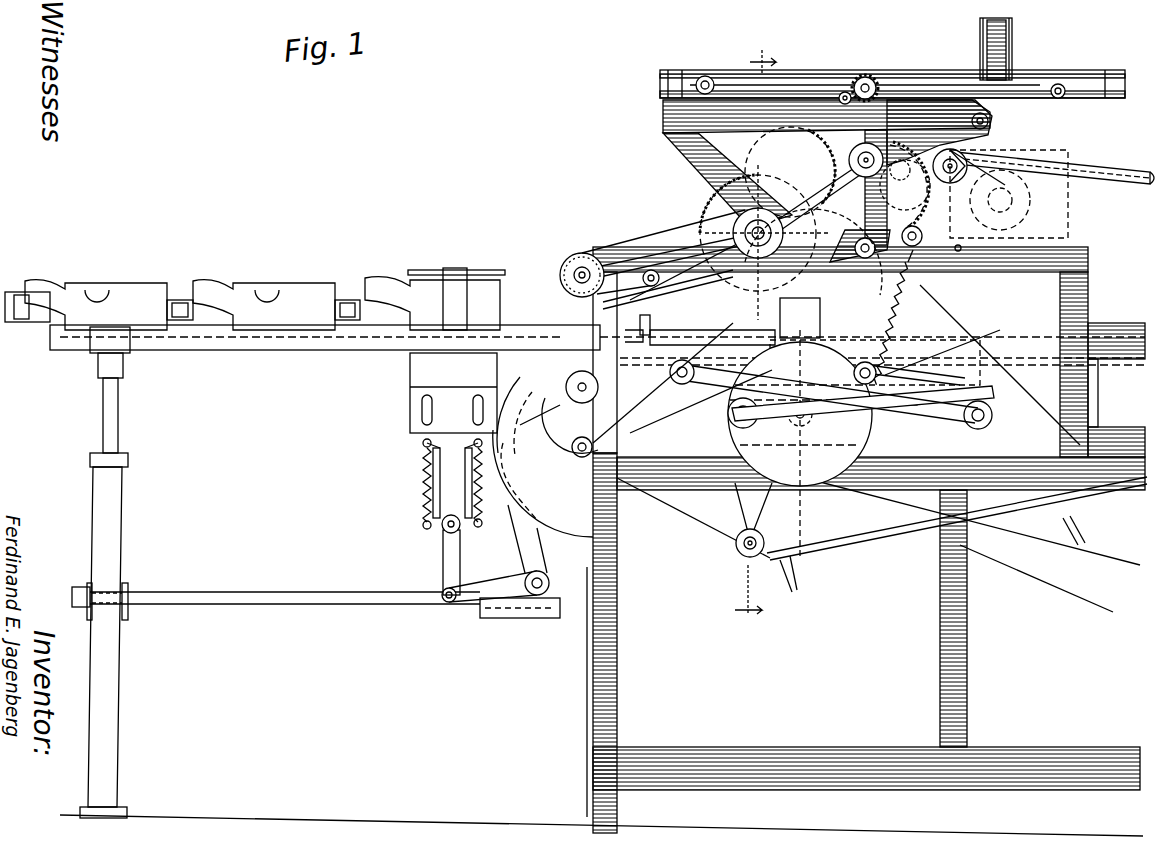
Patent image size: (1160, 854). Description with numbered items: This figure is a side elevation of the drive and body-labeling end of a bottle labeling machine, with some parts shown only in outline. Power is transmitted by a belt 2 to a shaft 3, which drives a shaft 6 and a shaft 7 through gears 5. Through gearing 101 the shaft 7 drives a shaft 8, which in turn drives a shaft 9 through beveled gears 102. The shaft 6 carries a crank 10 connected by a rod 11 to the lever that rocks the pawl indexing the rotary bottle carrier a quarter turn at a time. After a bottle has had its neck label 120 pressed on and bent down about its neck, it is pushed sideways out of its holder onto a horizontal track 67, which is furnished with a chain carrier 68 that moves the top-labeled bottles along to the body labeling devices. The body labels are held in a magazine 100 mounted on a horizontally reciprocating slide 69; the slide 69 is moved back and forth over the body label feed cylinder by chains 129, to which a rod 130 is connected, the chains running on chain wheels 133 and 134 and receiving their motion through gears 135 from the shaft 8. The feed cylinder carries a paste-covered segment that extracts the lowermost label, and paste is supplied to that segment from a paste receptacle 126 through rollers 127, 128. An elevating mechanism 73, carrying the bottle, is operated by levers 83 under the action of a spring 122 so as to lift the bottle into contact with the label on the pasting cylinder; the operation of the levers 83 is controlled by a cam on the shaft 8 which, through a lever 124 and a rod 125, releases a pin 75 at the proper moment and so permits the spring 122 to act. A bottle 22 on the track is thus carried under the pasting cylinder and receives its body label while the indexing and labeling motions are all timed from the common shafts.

The belt 2 is at (1053, 603).
The shaft 3 is at (758, 358).
The gears 5 is at (825, 284).
The shaft 6 is at (801, 420).
The shaft 7 is at (745, 231).
The shaft 8 is at (852, 155).
The shaft 9 is at (1078, 150).
The crank 10 is at (995, 123).
The rod 11 is at (995, 390).
The bottle 22 is at (160, 281).
The track 67 is at (393, 345).
The supplemental chain carrier 68 is at (1159, 383).
The slide 69 is at (1025, 86).
The elevating mechanism 73 is at (670, 360).
The pin 75 is at (932, 375).
The levers 83 is at (690, 384).
The body label magazine 100 is at (1012, 40).
The gearing 101 is at (810, 146).
The beveled gears 102 is at (912, 193).
The label 120 is at (37, 292).
The spring 122 is at (933, 296).
The lever 124 is at (862, 303).
The rod 125 is at (950, 320).
The paste receptacle 126 is at (1072, 228).
The roller 127 is at (1020, 168).
The roller 128 is at (965, 163).
The chains 129 is at (810, 73).
The rod 130 is at (932, 92).
The chain wheel 133 is at (878, 80).
The chain wheel 134 is at (703, 74).
The gears 135 is at (850, 90).